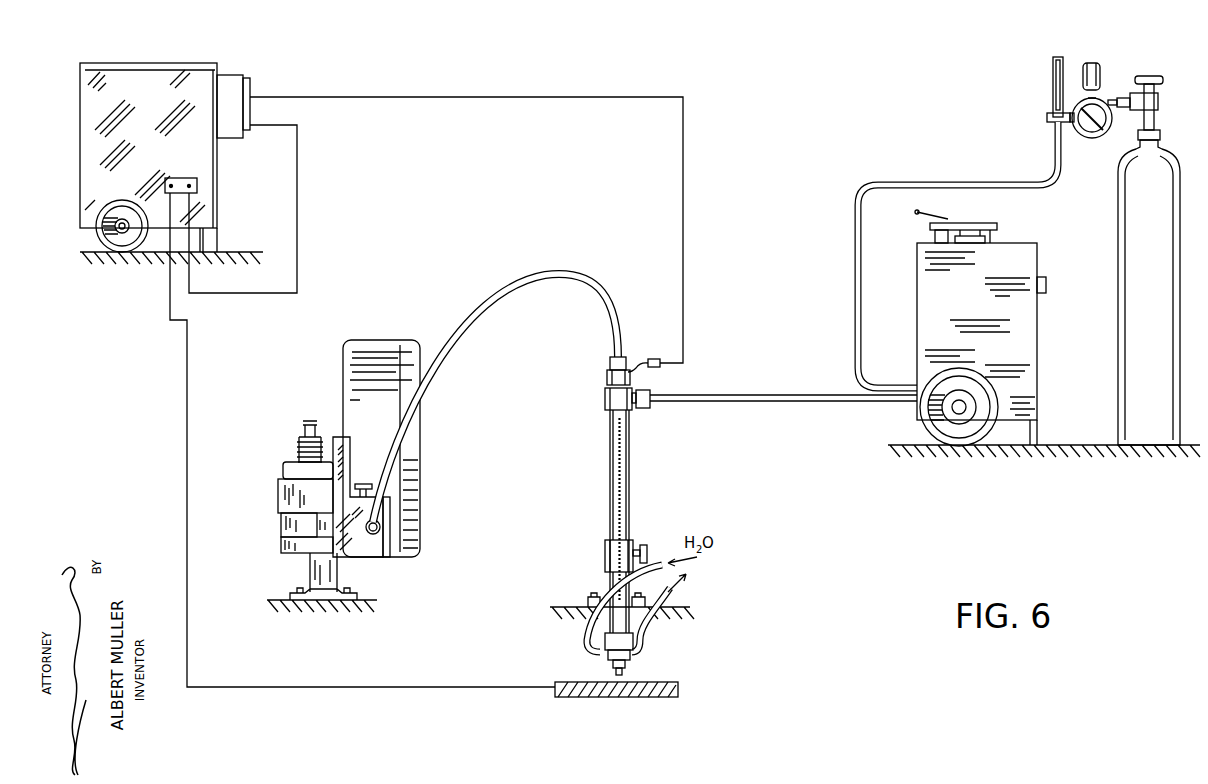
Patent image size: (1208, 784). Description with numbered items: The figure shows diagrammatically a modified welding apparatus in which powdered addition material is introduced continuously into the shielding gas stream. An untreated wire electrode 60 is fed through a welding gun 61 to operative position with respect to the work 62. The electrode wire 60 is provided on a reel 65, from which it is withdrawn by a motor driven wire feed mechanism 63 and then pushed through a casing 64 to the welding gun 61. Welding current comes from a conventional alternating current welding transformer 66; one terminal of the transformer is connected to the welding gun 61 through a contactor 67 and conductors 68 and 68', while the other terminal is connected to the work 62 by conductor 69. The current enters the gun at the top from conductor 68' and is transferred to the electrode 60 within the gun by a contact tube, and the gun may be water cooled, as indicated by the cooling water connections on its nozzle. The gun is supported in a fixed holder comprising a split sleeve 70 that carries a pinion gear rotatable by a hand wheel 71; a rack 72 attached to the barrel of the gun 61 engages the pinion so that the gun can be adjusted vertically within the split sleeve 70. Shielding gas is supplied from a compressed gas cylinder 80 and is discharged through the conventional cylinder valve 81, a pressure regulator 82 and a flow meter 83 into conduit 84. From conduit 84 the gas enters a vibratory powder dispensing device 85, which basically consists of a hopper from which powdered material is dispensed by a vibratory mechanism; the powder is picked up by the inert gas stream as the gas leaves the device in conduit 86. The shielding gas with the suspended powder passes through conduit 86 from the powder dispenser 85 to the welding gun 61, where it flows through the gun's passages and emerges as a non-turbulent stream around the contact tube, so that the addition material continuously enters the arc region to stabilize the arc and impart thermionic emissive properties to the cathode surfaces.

The wire electrode 60 is at (622, 676).
The welding gun 61 is at (629, 503).
The work 62 is at (673, 685).
The motor driven wire feed mechanism 63 is at (355, 557).
The casing 64 is at (505, 285).
The reel 65 is at (355, 361).
The alternating current welding transformer 66 is at (138, 64).
The contactor 67 is at (230, 83).
The conductor 68 is at (261, 209).
The conductor 68' is at (466, 222).
The conductor 69 is at (188, 506).
The split sleeve 70 is at (607, 545).
The hand wheel 71 is at (640, 550).
The rack 72 is at (625, 470).
The compressed gas cylinder 80 is at (1123, 323).
The cylinder valve 81 is at (1153, 108).
The pressure regulator 82 is at (1104, 137).
The flow meter 83 is at (1052, 79).
The conduit 84 is at (854, 228).
The vibratory powder dispensing device 85 is at (925, 311).
The conduit 86 is at (835, 406).